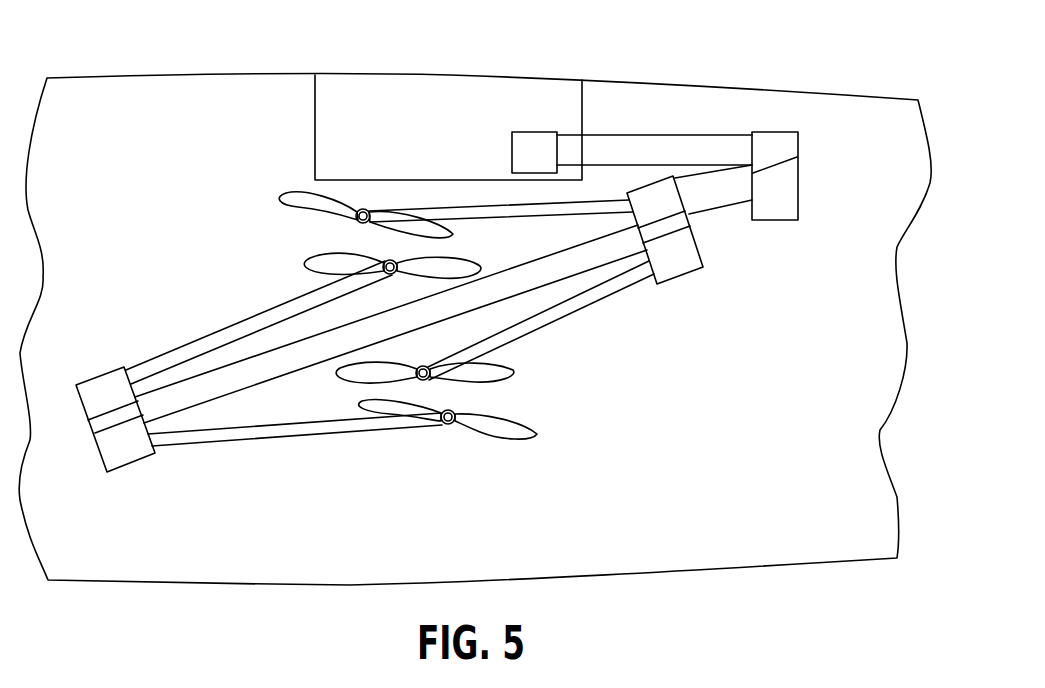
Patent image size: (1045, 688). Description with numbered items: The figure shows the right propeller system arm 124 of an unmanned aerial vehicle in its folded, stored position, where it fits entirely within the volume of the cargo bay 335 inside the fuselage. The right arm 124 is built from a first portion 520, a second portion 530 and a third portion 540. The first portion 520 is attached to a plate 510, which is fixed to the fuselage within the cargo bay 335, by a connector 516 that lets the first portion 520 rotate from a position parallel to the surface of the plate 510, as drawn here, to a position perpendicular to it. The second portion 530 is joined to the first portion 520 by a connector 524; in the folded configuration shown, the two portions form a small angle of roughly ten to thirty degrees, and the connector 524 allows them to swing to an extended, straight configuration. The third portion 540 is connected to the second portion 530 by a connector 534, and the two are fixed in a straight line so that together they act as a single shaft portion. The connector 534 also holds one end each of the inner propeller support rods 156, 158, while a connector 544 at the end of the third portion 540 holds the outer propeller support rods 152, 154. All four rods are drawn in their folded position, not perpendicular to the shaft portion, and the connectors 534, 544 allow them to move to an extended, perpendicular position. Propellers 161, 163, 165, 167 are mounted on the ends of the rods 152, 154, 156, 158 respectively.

The cargo bay 335 is at (200, 150).
The plate 510 is at (418, 113).
The connector 516 is at (527, 132).
The first portion 520 is at (633, 135).
The right propeller system arm 124 is at (717, 135).
The connector 524 is at (800, 173).
The second portion 530 is at (722, 227).
The connector 534 is at (688, 272).
The connector 544 is at (90, 457).
The outer propeller support rod 154 is at (210, 337).
The third portion 540 is at (580, 245).
The inner propeller support rod 156 is at (582, 307).
The outer propeller support rod 152 is at (273, 440).
The inner propeller support rod 158 is at (352, 192).
The propeller 167 is at (277, 200).
The propeller 163 is at (330, 255).
The propeller 165 is at (517, 374).
The propeller 161 is at (530, 447).